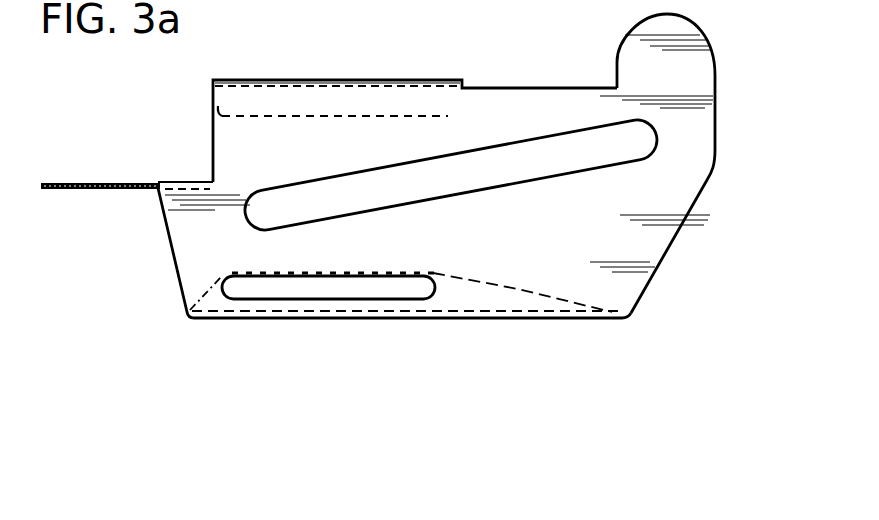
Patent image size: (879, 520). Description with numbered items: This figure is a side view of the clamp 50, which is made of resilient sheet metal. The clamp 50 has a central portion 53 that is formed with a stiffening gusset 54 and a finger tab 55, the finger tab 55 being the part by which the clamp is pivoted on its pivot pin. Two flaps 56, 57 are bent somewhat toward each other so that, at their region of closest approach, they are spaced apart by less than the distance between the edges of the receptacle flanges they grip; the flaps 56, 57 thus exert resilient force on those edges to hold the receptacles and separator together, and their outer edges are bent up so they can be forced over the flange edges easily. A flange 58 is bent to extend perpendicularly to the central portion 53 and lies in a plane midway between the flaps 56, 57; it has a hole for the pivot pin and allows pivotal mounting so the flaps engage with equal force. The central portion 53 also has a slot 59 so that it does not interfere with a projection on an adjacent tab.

The clamp 50 is at (530, 90).
The central portion 53 is at (625, 287).
The stiffening gusset 54 is at (507, 186).
The finger tab 55 is at (697, 25).
The flap 56 is at (452, 118).
The flap 57 is at (516, 289).
The flange 58 is at (122, 183).
The slot 59 is at (370, 296).